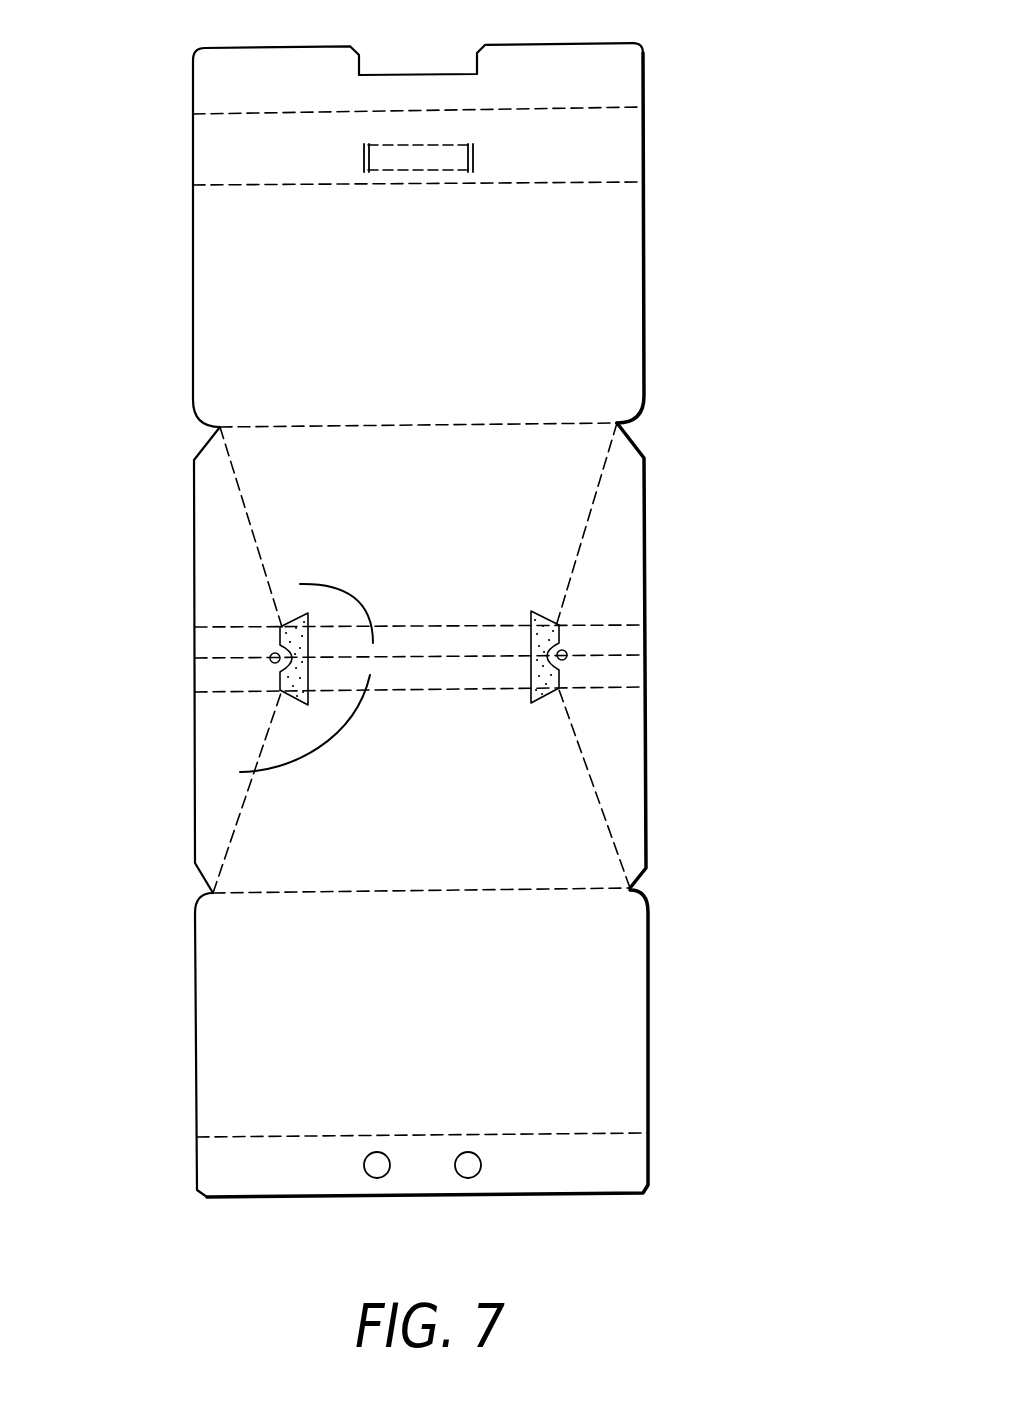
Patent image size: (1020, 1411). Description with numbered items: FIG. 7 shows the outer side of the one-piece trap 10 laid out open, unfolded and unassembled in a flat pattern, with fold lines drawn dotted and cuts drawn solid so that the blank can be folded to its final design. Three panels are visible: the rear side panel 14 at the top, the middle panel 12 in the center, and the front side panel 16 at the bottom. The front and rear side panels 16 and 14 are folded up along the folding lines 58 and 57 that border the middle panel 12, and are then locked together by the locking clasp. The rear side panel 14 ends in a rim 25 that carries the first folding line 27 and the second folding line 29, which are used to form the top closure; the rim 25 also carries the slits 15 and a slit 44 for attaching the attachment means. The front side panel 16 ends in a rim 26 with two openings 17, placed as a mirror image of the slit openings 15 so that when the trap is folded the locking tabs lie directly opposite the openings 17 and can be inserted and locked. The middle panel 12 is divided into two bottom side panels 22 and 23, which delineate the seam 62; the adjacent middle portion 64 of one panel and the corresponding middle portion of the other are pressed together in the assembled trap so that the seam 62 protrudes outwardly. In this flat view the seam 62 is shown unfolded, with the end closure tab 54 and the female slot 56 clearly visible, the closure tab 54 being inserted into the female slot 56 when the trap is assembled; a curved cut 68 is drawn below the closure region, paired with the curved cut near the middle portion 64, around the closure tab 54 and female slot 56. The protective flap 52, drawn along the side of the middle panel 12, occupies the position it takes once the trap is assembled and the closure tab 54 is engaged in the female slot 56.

The trap 10 is at (680, 295).
The middle panel 12 is at (657, 422).
The rear side panel 14 is at (647, 245).
The slits 15 is at (363, 157).
The front side panel 16 is at (197, 1027).
The openings 17 is at (388, 1175).
The bottom front panel 22 is at (565, 790).
The bottom rear panel 23 is at (570, 485).
The rim 25 is at (182, 50).
The rim 26 is at (622, 1162).
The first folding line 27 is at (613, 182).
The second folding line 29 is at (587, 108).
The slit 44 is at (425, 185).
The protective flap 52 is at (633, 582).
The closure tab 54 is at (295, 618).
The female slot 56 is at (298, 700).
The folding line 57 is at (582, 891).
The folding line 58 is at (500, 423).
The seam 62 is at (183, 627).
The middle portion 64 is at (300, 584).
The lower arcuate cut 68 is at (240, 772).